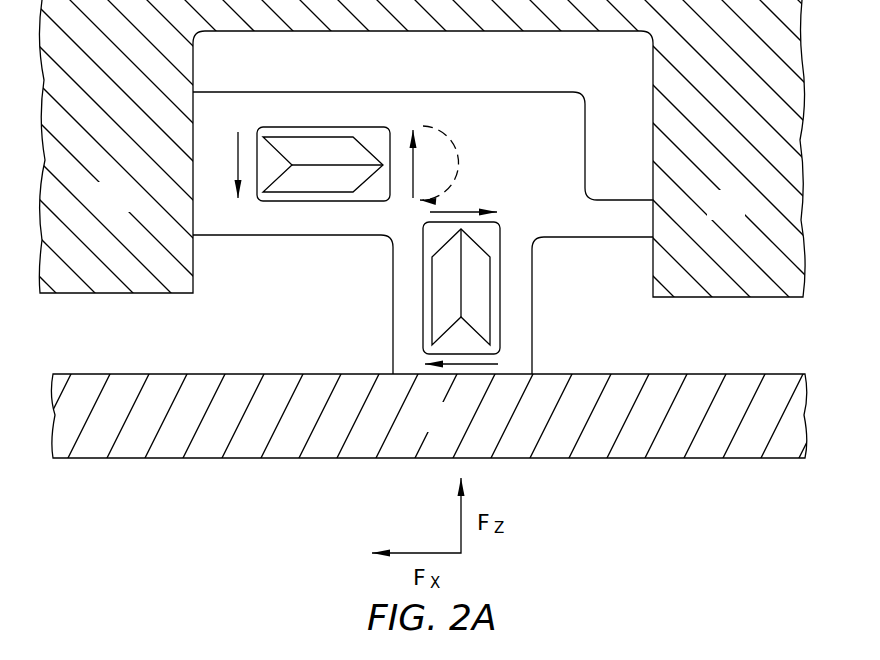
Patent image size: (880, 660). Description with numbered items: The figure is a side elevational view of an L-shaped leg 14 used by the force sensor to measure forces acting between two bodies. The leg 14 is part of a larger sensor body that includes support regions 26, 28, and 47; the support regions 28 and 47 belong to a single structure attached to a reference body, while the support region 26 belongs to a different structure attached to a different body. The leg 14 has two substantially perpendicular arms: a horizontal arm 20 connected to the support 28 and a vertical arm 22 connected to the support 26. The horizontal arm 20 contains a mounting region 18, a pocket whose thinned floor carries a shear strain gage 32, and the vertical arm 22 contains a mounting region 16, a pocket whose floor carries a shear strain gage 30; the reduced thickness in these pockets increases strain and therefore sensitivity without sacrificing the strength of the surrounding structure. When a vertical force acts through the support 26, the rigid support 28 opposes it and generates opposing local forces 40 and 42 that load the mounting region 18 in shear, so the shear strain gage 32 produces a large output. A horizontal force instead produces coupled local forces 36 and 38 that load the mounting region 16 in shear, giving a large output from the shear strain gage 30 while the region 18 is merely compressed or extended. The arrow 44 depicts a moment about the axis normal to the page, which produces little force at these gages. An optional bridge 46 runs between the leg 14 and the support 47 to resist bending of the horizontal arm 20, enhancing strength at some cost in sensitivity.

The L-shaped leg 14 is at (253, 329).
The mounting region 16 is at (512, 288).
The mounting region 18 is at (323, 128).
The horizontal arm 20 is at (293, 261).
The vertical arm 22 is at (495, 305).
The support region 26 is at (440, 429).
The support region 28 is at (128, 210).
The shear strain gage 30 is at (516, 287).
The shear strain gage 32 is at (308, 124).
The local force 36 is at (479, 194).
The local force 38 is at (509, 359).
The local force 40 is at (417, 128).
The local force 42 is at (238, 204).
The arrow 44 is at (476, 158).
The bridge 46 is at (423, 154).
The support region 47 is at (742, 217).